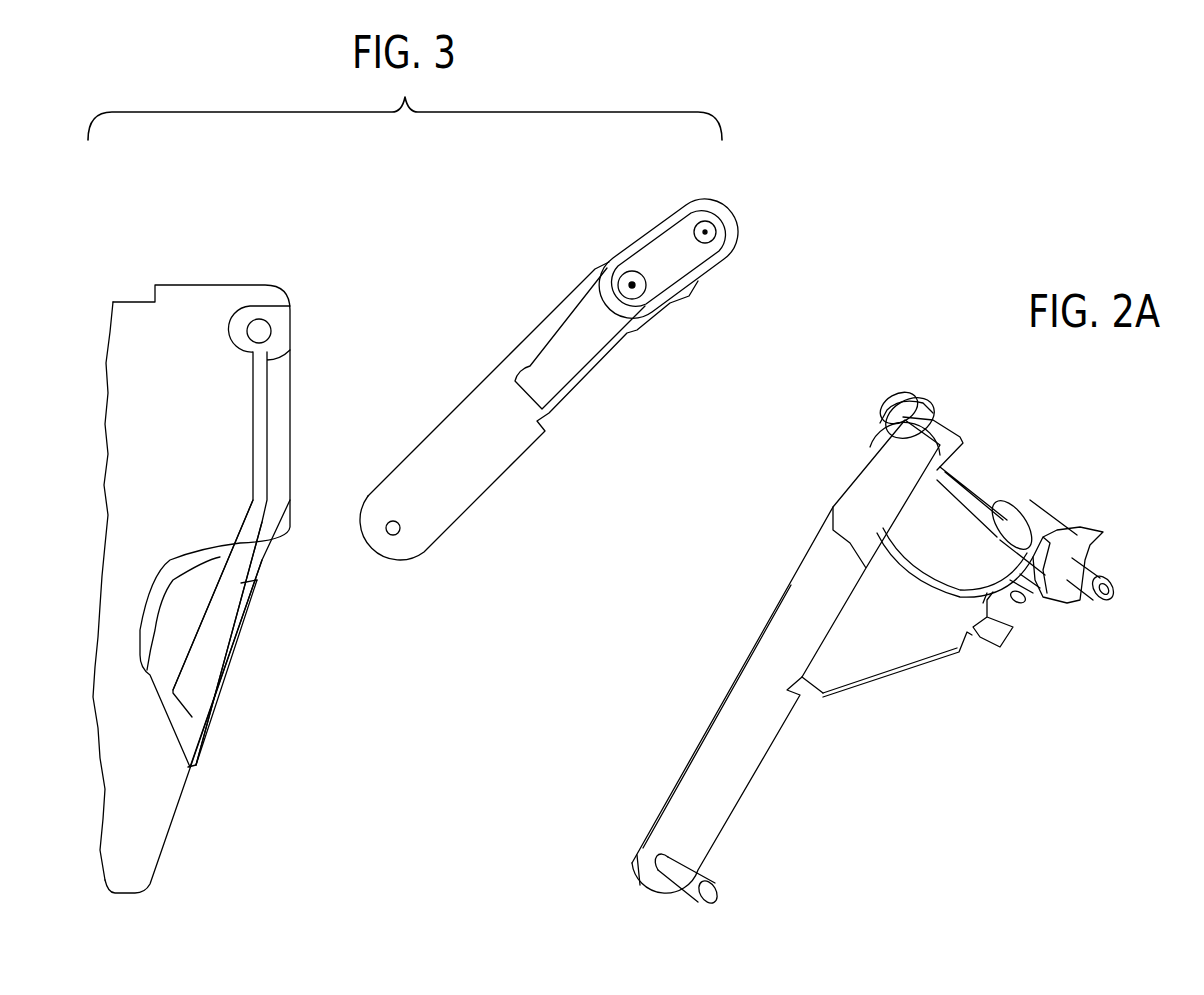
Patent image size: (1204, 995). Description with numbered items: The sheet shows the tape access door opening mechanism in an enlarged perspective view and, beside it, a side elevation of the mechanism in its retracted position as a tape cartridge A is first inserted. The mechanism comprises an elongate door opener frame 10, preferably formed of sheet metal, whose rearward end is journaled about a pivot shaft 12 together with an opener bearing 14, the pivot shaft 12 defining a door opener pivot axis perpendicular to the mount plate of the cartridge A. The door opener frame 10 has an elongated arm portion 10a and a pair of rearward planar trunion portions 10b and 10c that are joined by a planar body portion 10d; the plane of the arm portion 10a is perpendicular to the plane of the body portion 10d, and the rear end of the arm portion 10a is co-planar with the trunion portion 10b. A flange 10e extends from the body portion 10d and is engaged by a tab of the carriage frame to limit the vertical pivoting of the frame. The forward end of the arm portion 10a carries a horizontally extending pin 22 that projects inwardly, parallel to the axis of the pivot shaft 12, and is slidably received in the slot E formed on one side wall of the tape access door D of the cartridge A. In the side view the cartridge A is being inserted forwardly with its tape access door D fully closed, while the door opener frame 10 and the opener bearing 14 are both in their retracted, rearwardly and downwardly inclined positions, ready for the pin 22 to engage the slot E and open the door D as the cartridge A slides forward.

In FIG. 3, the tape cartridge A is at (180, 350).
In FIG. 3, the tape access door D is at (215, 700).
In FIG. 3, the slot E is at (210, 643).
In FIG. 3, the door opener frame 10 is at (565, 396).
In FIG. 2A, the door opener frame 10 is at (899, 635).
In FIG. 3, the arm portion 10a is at (513, 467).
In FIG. 2A, the arm portion 10a is at (737, 667).
In FIG. 2A, the trunion portion 10b is at (950, 414).
In FIG. 2A, the trunion portion 10c is at (1078, 527).
In FIG. 2A, the body portion 10d is at (853, 680).
In FIG. 2A, the flange 10e is at (990, 637).
In FIG. 3, the pivot shaft 12 is at (708, 226).
In FIG. 2A, the pivot shaft 12 is at (1097, 567).
In FIG. 3, the opener bearing 14 is at (633, 242).
In FIG. 2A, the opener bearing 14 is at (1023, 603).
In FIG. 3, the pin 22 is at (397, 533).
In FIG. 2A, the pin 22 is at (703, 877).